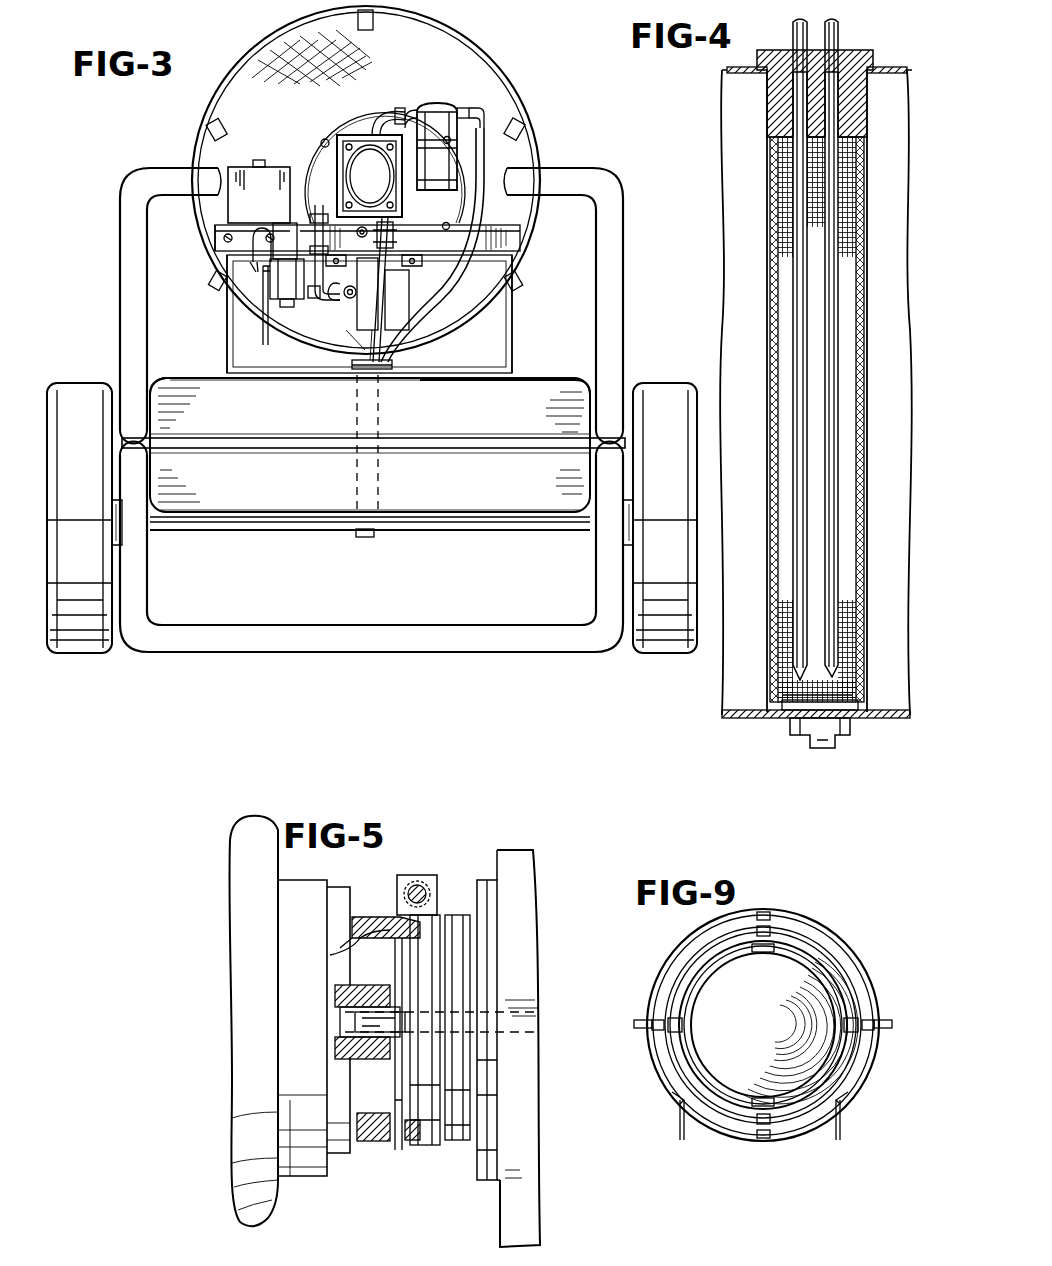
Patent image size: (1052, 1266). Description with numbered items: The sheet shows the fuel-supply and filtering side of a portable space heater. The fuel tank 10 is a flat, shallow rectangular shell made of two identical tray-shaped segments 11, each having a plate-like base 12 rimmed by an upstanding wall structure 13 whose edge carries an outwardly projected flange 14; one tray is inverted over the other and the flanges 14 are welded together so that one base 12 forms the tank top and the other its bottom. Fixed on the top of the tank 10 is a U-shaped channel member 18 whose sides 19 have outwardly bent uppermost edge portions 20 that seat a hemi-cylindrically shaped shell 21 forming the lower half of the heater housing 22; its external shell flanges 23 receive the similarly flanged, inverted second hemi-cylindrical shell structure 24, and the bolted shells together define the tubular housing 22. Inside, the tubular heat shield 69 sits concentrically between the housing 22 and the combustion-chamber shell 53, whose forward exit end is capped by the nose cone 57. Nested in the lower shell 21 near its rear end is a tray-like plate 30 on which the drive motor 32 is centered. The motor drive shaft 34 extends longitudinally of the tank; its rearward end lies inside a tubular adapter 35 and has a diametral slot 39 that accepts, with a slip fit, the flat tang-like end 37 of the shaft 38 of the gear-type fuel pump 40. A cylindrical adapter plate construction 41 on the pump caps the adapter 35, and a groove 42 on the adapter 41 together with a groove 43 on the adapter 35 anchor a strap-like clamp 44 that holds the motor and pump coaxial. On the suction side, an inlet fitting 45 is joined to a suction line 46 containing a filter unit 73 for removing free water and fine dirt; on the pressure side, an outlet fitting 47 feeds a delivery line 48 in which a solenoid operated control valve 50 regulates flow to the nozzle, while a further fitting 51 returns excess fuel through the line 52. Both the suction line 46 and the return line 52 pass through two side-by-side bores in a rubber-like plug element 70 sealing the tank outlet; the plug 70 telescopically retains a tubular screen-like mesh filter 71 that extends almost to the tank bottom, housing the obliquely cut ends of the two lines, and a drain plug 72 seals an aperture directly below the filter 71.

In FIG. 3, the fuel tank 10 is at (262, 492).
In FIG. 4, the tray-shaped segment 11 is at (744, 246).
In FIG. 3, the base 12 is at (547, 378).
In FIG. 4, the base 12 is at (744, 718).
In FIG. 3, the wall structure 13 is at (158, 380).
In FIG. 3, the flange 14 is at (218, 440).
In FIG. 3, the channel member 18 is at (513, 340).
In FIG. 3, the sides 19 is at (224, 326).
In FIG. 9, the sides 19 is at (845, 1125).
In FIG. 3, the uppermost edge portions 20 is at (520, 282).
In FIG. 9, the uppermost edge portions 20 is at (675, 1108).
In FIG. 3, the hemi-cylindrically shaped shell 21 is at (206, 253).
In FIG. 9, the hemi-cylindrically shaped shell 21 is at (870, 1062).
In FIG. 3, the heater housing 22 is at (506, 62).
In FIG. 9, the heater housing 22 is at (656, 983).
In FIG. 9, the shell flanges 23 is at (888, 1024).
In FIG. 3, the second hemi-cylindrical shell structure 24 is at (198, 156).
In FIG. 9, the second hemi-cylindrical shell structure 24 is at (675, 950).
In FIG. 3, the tray-like plate 30 is at (487, 246).
In FIG. 3, the drive motor 32 is at (338, 118).
In FIG. 5, the drive motor 32 is at (262, 984).
In FIG. 5, the drive shaft 34 is at (348, 984).
In FIG. 5, the tubular adapter 35 is at (367, 915).
In FIG. 5, the tang-like end 37 is at (382, 1060).
In FIG. 5, the shaft 38 is at (505, 1008).
In FIG. 5, the diametral slot 39 is at (350, 1016).
In FIG. 3, the fuel pump 40 is at (338, 140).
In FIG. 5, the fuel pump 40 is at (517, 904).
In FIG. 5, the cylindrical adapter plate construction 41 is at (404, 962).
In FIG. 5, the groove 42 is at (455, 1142).
In FIG. 5, the groove 43 is at (394, 1143).
In FIG. 5, the strap-like clamp 44 is at (425, 1148).
In FIG. 3, the inlet fitting 45 is at (385, 110).
In FIG. 3, the suction line 46 is at (440, 286).
In FIG. 4, the suction line 46 is at (840, 30).
In FIG. 3, the outlet fitting 47 is at (320, 204).
In FIG. 3, the delivery line 48 is at (342, 300).
In FIG. 3, the solenoid operated control valve 50 is at (288, 250).
In FIG. 3, the fitting 51 is at (405, 228).
In FIG. 3, the line 52 is at (362, 366).
In FIG. 4, the line 52 is at (794, 32).
In FIG. 9, the shell 53 is at (690, 1062).
In FIG. 9, the nose cone 57 is at (766, 1021).
In FIG. 9, the tubular heat shield 69 is at (662, 1042).
In FIG. 3, the plug element 70 is at (372, 372).
In FIG. 4, the plug element 70 is at (880, 50).
In FIG. 3, the mesh filter 71 is at (355, 484).
In FIG. 4, the mesh filter 71 is at (770, 356).
In FIG. 3, the drain plug 72 is at (366, 538).
In FIG. 4, the drain plug 72 is at (823, 748).
In FIG. 3, the filter unit 73 is at (455, 166).